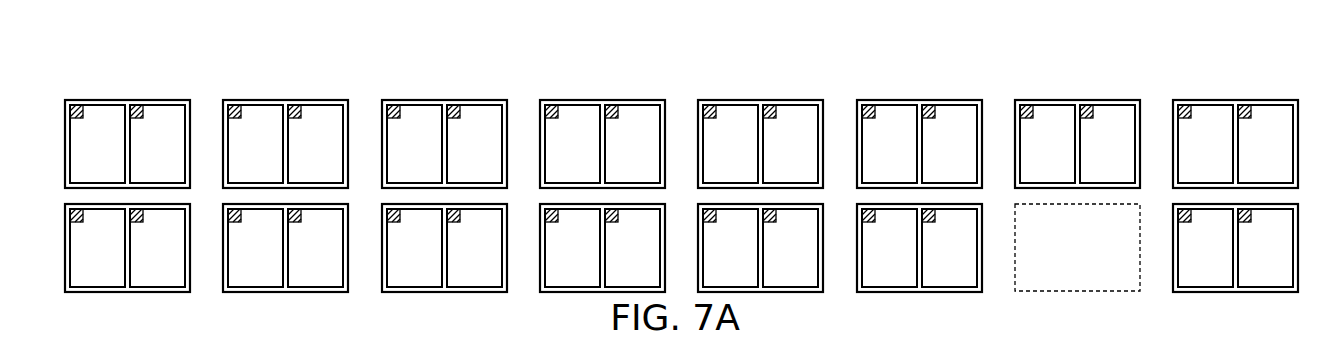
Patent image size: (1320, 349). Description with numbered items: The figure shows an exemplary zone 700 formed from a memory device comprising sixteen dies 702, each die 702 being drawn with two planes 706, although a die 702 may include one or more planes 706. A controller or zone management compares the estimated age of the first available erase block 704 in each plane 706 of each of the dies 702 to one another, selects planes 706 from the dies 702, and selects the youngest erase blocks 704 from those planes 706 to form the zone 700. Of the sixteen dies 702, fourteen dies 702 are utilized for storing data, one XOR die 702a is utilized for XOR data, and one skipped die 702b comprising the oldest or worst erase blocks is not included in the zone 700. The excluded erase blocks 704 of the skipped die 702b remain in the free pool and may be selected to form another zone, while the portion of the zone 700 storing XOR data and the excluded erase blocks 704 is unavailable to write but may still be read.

The zone 700 is at (122, 81).
The die 702 is at (393, 106).
The XOR die 702a is at (1238, 293).
The skipped die 702b is at (1082, 292).
The erase block 704 is at (395, 107).
The plane 706 is at (493, 159).